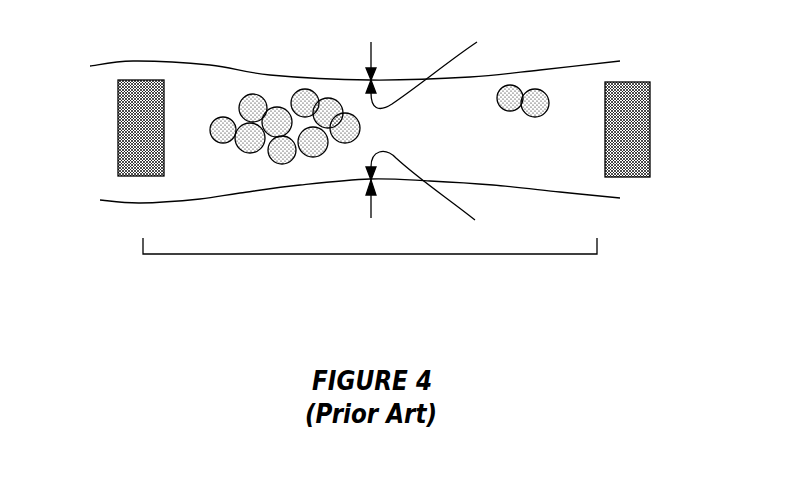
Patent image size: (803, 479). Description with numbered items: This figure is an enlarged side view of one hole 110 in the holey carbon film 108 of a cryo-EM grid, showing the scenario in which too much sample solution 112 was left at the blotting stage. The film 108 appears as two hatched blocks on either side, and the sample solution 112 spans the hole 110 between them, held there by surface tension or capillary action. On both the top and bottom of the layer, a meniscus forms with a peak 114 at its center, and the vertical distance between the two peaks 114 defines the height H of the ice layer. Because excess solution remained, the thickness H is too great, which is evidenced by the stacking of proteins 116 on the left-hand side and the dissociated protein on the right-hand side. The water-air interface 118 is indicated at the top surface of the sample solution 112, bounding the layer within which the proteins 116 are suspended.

The film 108 is at (118, 118).
The hole 110 is at (367, 254).
The sample solution 112 is at (225, 88).
The peak 114 is at (440, 131).
The proteins 116 is at (522, 92).
The water-air interface 118 is at (183, 62).
The height of the ice layer H is at (370, 46).